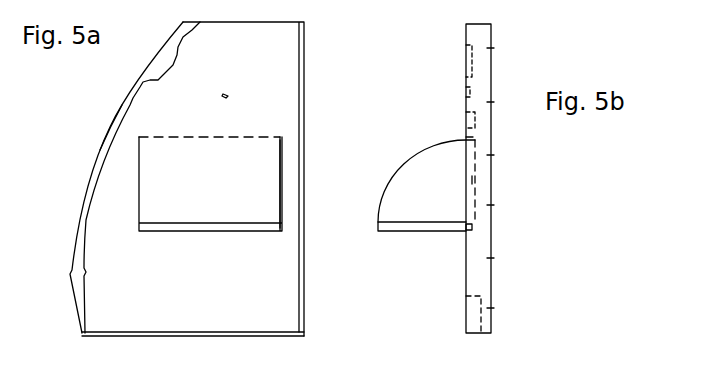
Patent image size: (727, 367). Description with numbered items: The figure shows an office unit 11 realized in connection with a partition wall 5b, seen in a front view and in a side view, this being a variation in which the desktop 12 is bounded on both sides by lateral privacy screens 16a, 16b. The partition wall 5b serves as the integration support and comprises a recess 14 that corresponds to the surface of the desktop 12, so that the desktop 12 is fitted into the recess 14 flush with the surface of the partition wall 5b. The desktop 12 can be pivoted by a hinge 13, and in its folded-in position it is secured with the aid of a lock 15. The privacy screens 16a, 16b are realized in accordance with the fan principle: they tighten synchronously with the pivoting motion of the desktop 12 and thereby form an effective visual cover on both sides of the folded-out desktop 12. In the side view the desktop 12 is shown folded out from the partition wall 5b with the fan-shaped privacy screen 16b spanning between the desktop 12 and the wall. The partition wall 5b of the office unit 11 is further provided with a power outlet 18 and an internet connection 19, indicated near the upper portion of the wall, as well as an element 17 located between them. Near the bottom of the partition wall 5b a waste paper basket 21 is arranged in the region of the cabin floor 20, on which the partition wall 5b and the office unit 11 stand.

In FIG. 5A, the partition wall 5b is at (110, 127).
In FIG. 5B, the partition wall 5b is at (492, 296).
In FIG. 5A, the office unit 11 is at (314, 156).
In FIG. 5A, the desktop 12 is at (248, 232).
In FIG. 5B, the desktop 12 is at (428, 233).
In FIG. 5B, the hinge 13 is at (472, 228).
In FIG. 5B, the recess 14 is at (472, 180).
In FIG. 5A, the lock 15 is at (228, 97).
In FIG. 5A, the privacy screen 16a is at (138, 187).
In FIG. 5A, the privacy screen 16b is at (283, 203).
In FIG. 5B, the privacy screen 16b is at (442, 172).
In FIG. 5B, the latch 17 is at (466, 122).
In FIG. 5B, the power outlet 18 is at (466, 95).
In FIG. 5B, the internet connection 19 is at (466, 73).
In FIG. 5A, the cabin floor 20 is at (275, 338).
In FIG. 5B, the waste paper basket 21 is at (470, 315).